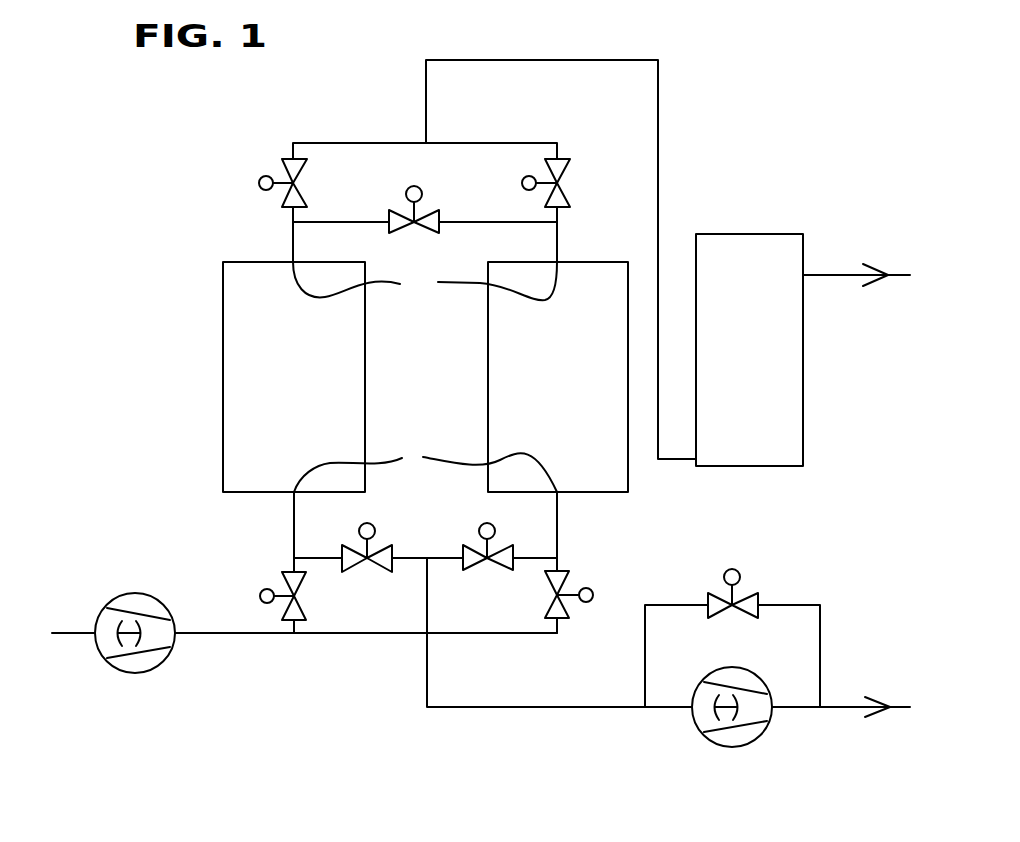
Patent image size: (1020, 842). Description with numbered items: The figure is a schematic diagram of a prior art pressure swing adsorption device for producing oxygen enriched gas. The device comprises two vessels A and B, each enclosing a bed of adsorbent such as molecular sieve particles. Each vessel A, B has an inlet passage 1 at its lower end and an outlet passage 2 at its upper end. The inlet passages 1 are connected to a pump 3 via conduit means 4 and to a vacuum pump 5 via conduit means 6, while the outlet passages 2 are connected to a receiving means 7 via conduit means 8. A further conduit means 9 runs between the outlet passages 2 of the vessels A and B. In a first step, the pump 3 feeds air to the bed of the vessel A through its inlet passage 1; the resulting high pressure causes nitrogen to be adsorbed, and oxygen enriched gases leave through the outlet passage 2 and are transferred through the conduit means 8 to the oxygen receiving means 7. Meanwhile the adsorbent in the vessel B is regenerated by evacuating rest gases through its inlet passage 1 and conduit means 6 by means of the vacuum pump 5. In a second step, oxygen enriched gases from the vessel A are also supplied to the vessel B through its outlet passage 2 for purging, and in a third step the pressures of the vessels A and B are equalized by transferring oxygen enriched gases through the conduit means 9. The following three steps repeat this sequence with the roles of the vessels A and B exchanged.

The inlet passage 1 is at (426, 538).
The outlet passage 2 is at (414, 229).
The pump 3 is at (133, 673).
The conduit means 4 is at (332, 633).
The vacuum pump 5 is at (730, 747).
The conduit means 6 is at (459, 707).
The receiving means 7 is at (778, 409).
The conduit means 8 is at (373, 143).
The conduit means 9 is at (483, 222).
The vessel A is at (247, 374).
The vessel B is at (508, 385).